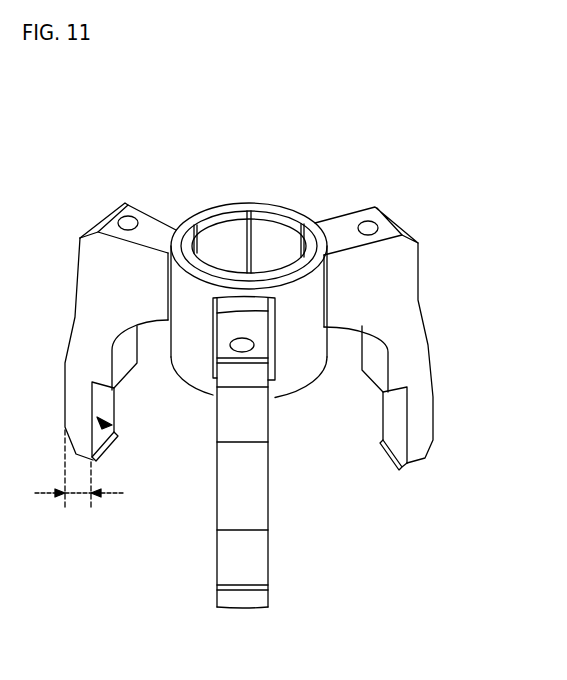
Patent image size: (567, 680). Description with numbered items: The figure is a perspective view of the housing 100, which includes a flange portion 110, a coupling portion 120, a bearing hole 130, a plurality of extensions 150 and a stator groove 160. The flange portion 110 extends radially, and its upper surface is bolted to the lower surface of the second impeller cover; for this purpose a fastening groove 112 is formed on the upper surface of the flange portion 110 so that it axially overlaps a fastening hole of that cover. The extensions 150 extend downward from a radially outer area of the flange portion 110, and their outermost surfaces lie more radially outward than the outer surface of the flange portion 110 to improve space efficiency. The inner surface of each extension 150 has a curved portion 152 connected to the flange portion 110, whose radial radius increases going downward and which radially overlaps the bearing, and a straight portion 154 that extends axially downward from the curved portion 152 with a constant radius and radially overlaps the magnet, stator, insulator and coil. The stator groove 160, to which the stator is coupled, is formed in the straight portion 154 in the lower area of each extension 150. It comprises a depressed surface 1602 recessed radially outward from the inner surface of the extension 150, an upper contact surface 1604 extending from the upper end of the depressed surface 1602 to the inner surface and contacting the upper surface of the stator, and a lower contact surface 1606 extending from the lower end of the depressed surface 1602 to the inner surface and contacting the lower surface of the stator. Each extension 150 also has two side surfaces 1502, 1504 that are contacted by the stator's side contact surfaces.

The housing 100 is at (112, 105).
The flange portion 110 is at (337, 232).
The fastening groove 112 is at (368, 228).
The coupling portion 120 is at (268, 202).
The bearing hole 130 is at (222, 222).
The extensions 150 is at (418, 351).
The curved portion 152 is at (350, 327).
The straight portion 154 is at (122, 364).
The stator groove 160 is at (112, 426).
The side surface of extension 1502 is at (216, 553).
The side surface of extension 1504 is at (269, 560).
The depressed surface 1602 is at (398, 415).
The upper contact surface 1604 is at (375, 383).
The lower contact surface 1606 is at (388, 453).